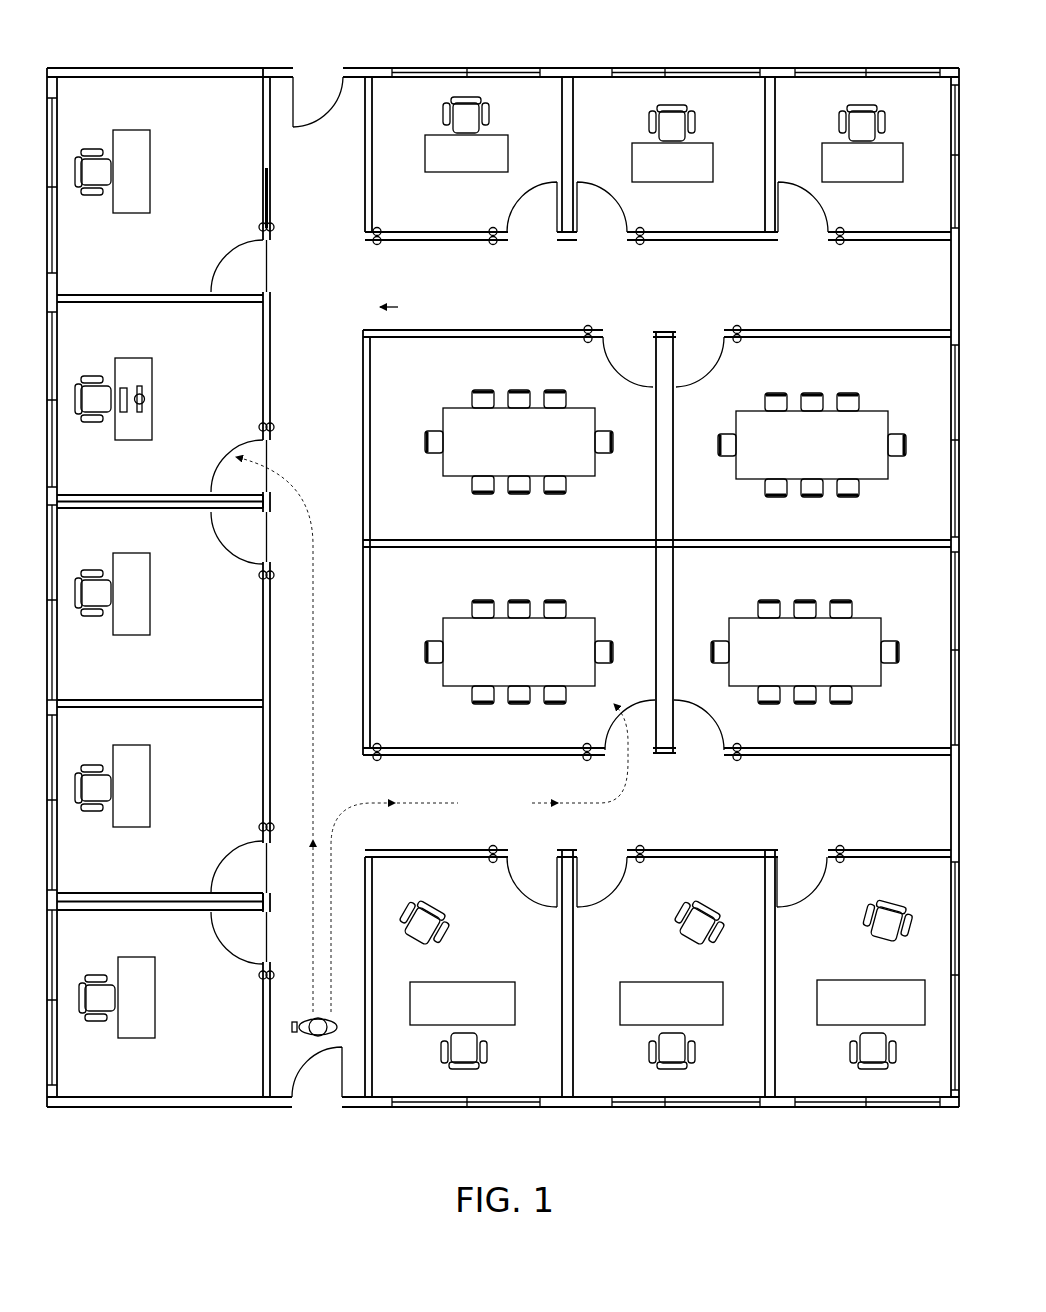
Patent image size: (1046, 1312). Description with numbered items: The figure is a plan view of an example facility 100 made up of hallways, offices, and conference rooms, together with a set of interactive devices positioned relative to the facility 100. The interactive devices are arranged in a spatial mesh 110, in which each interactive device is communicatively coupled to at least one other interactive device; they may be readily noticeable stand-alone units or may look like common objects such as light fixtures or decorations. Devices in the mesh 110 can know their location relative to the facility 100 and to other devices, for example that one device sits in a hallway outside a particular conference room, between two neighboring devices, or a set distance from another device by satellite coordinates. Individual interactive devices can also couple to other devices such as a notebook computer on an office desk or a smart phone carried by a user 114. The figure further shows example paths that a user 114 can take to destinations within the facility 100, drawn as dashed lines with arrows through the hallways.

The facility 100 is at (574, 33).
The spatial mesh 110 is at (408, 308).
The user 114 is at (317, 1036).